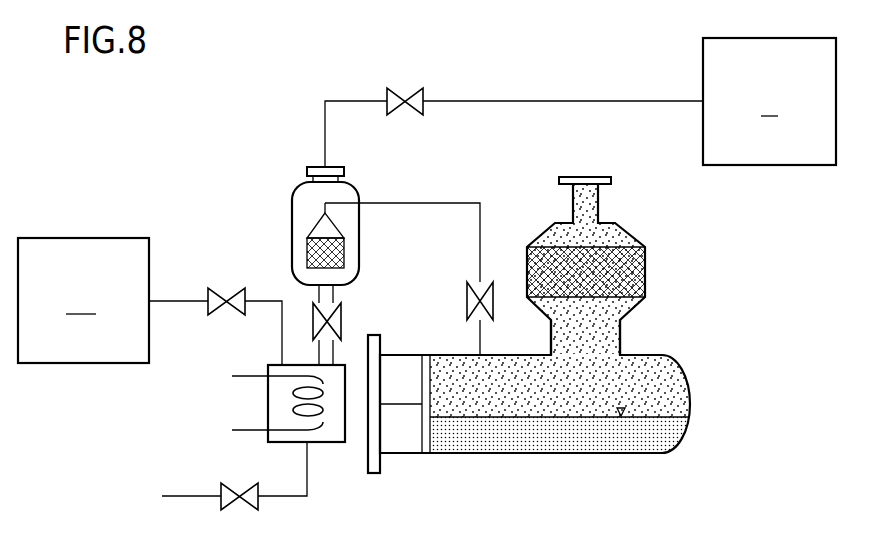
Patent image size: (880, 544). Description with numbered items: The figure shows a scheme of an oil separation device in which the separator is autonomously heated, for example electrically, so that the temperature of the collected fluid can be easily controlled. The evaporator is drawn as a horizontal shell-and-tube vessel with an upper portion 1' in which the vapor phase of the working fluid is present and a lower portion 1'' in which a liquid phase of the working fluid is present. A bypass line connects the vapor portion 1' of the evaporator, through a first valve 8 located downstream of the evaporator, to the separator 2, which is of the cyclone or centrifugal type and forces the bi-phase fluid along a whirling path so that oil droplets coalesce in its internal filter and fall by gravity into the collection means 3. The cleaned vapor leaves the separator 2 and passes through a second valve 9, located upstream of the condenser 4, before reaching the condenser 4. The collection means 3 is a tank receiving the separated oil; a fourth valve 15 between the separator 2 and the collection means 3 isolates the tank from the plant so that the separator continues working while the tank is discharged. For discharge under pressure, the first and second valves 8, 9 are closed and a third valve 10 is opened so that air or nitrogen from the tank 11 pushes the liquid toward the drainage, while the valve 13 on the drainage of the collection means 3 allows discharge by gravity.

The portion of the evaporator containing the vapor phase 1' is at (583, 368).
The portion of the evaporator containing the liquid phase 1'' is at (571, 469).
The separator 2 is at (303, 192).
The collection means 3 is at (322, 430).
The condenser 4 is at (769, 101).
The first valve 8 is at (477, 312).
The second valve 9 is at (417, 99).
The third valve 10 is at (240, 290).
The tank for air or nitrogen 11 is at (83, 300).
The valve on the drainage 13 is at (232, 490).
The fourth valve 15 is at (330, 313).